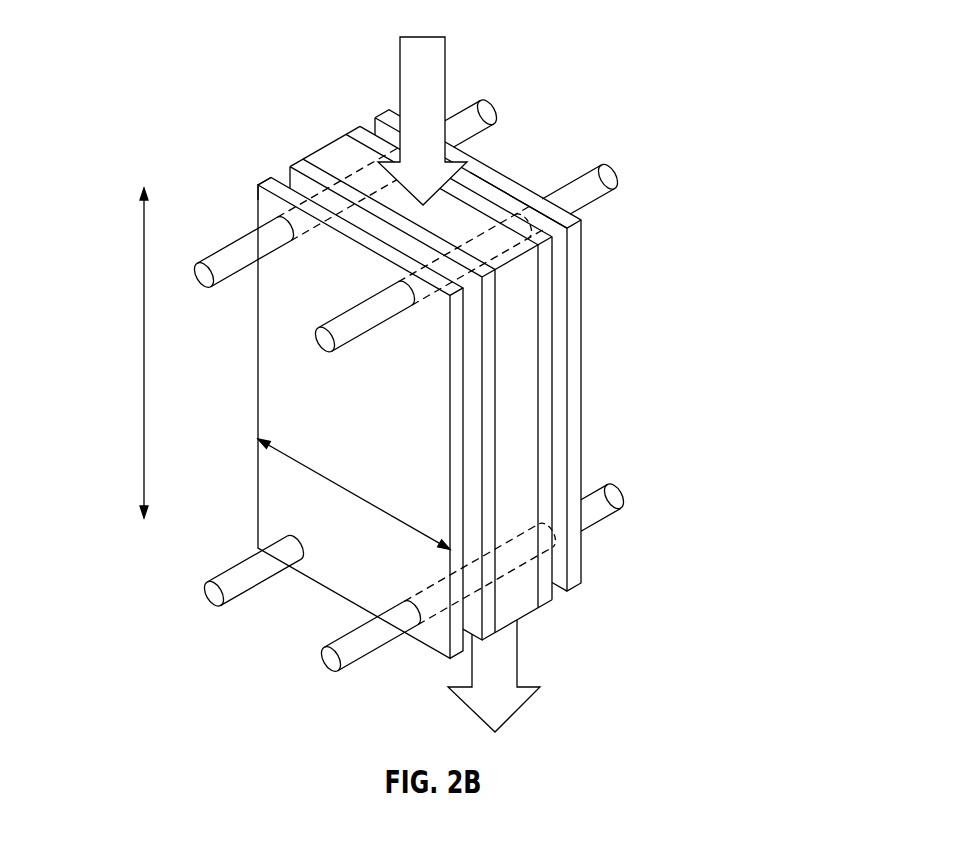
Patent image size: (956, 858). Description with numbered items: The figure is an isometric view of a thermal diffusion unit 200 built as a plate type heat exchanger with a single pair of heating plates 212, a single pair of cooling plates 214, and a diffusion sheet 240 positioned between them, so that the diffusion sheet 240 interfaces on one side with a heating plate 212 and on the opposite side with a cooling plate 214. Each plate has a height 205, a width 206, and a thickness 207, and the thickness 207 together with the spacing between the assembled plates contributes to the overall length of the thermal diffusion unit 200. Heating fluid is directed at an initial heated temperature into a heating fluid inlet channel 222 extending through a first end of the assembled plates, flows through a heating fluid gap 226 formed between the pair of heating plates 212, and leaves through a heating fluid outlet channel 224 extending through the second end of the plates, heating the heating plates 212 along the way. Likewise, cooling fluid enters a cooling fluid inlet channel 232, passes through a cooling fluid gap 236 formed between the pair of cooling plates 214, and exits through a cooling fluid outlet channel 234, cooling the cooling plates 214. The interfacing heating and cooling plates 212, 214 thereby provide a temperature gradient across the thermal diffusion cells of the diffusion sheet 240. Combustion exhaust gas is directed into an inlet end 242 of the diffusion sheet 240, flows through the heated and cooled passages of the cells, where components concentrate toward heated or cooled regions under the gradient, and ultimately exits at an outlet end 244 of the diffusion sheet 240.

The thermal diffusion unit 200 is at (733, 37).
The height 205 is at (142, 358).
The width 206 is at (347, 489).
The thickness 207 is at (256, 178).
The heating plates 212 is at (545, 347).
The cooling plates 214 is at (458, 525).
The heating fluid inlet channel 222 is at (208, 258).
The heating fluid outlet channel 224 is at (218, 580).
The heating fluid gap 226 is at (496, 192).
The cooling fluid inlet channel 232 is at (598, 178).
The cooling fluid outlet channel 234 is at (333, 660).
The cooling fluid gap 236 is at (374, 224).
The diffusion sheet 240 is at (510, 400).
The inlet end 242 is at (400, 72).
The outlet end 244 is at (517, 660).